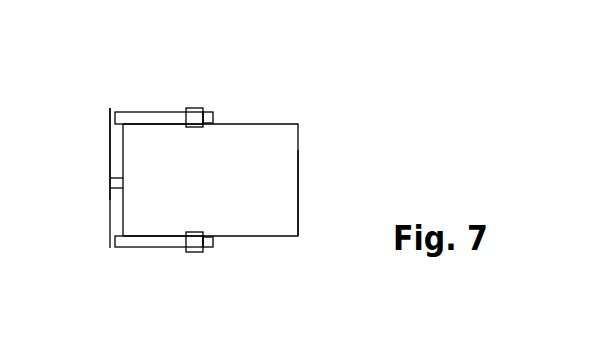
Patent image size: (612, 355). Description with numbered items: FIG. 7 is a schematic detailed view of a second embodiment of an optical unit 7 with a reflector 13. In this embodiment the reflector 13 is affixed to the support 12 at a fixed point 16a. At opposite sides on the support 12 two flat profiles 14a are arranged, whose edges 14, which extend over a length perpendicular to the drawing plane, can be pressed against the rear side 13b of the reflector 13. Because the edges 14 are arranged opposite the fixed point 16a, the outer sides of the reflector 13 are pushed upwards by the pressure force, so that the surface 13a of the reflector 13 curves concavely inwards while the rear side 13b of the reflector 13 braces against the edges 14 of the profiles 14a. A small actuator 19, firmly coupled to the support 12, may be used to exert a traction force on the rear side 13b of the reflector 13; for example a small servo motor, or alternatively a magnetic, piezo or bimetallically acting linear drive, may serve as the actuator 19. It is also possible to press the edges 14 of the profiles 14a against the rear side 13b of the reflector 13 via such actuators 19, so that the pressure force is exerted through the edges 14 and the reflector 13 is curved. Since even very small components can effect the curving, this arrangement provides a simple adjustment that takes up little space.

The module 7 is at (298, 212).
The support 12 is at (282, 143).
The reflector 13 is at (110, 222).
The surface 13a is at (110, 168).
The rear side 13b is at (119, 142).
The edges 14 is at (114, 109).
The flat profiles 14a is at (170, 113).
The fixed point 16a is at (124, 183).
The actuator 19 is at (205, 112).